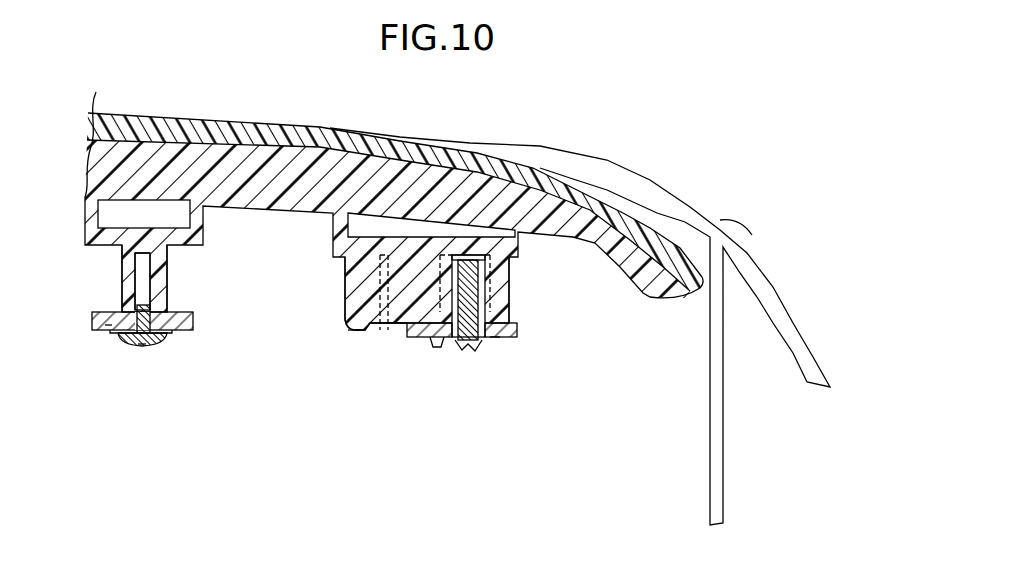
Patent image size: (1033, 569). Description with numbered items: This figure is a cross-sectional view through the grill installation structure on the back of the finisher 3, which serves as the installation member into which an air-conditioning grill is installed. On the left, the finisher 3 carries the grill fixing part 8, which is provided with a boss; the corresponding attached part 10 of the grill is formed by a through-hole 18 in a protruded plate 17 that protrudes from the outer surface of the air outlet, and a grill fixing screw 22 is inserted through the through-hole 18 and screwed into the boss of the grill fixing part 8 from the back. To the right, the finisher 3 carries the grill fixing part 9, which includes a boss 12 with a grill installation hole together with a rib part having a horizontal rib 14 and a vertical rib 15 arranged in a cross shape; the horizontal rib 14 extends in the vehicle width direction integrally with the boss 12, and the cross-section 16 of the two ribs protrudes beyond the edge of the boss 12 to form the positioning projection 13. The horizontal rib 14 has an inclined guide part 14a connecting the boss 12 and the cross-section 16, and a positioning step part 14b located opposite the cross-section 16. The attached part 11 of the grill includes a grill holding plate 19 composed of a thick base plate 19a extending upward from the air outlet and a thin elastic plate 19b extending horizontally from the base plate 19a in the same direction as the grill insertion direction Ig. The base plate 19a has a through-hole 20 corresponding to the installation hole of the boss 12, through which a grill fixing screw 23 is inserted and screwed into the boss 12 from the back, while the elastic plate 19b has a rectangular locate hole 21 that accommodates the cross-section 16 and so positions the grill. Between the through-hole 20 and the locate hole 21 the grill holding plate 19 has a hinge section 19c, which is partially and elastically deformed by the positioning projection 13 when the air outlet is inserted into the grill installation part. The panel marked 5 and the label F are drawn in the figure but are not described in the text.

The finisher 3 is at (652, 227).
The outer panel 5 is at (744, 243).
The grill fixing part 8 is at (160, 284).
The grill fixing part 9 is at (334, 261).
The attached part 10 is at (74, 339).
The attached part 11 is at (427, 346).
The boss 12 is at (488, 306).
The positioning projection 13 is at (367, 334).
The horizontal rib 14 is at (345, 308).
The inclined guide part 14a is at (401, 326).
The positioning step part 14b is at (356, 331).
The vertical rib 15 is at (380, 270).
The cross-section 16 is at (375, 340).
The protruded plate 17 is at (107, 326).
The through-hole 18 is at (153, 321).
The grill holding plate 19 is at (520, 333).
The base plate 19a is at (498, 340).
The elastic plate 19b is at (351, 329).
The hinge section 19c is at (424, 341).
The through-hole 20 is at (464, 361).
The locate hole 21 is at (416, 338).
The grill fixing screw 22 is at (157, 344).
The grill fixing screw 23 is at (486, 356).
The force direction F is at (603, 231).
The grill insertion direction Ig is at (485, 380).